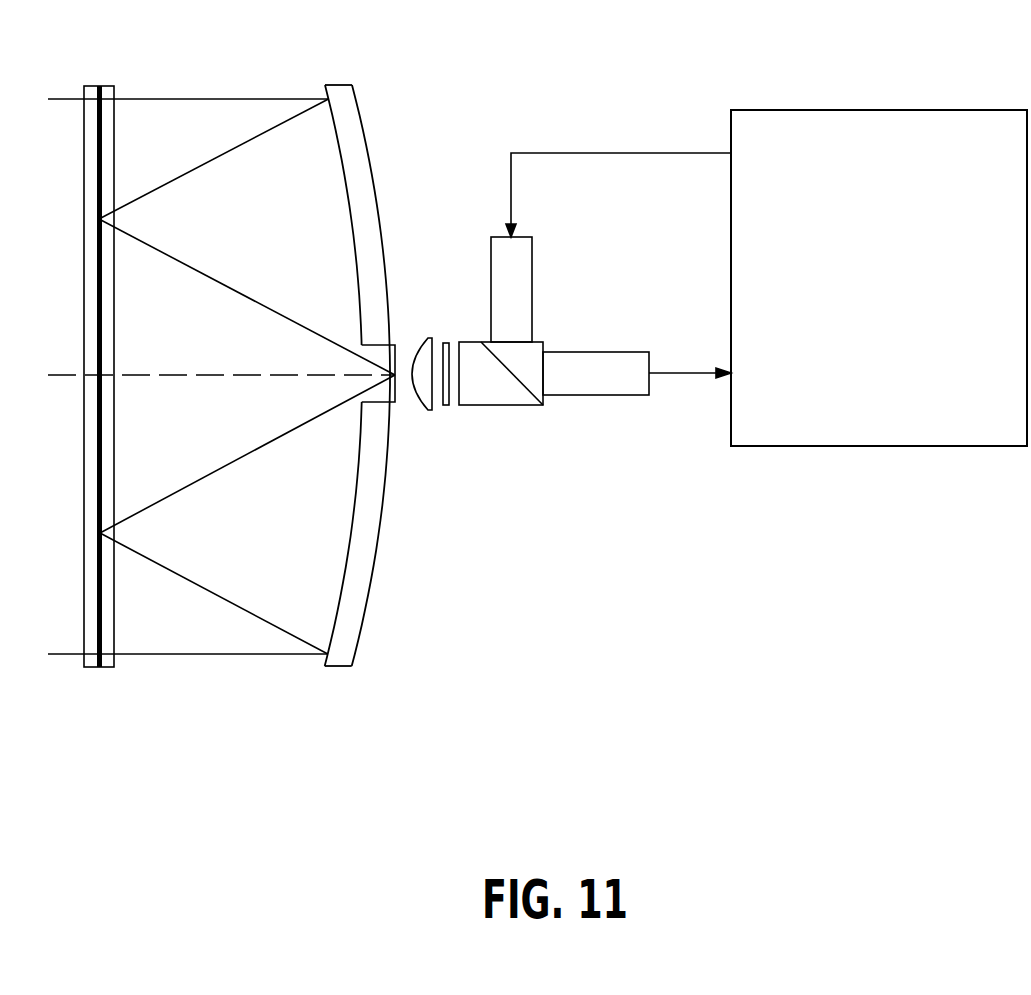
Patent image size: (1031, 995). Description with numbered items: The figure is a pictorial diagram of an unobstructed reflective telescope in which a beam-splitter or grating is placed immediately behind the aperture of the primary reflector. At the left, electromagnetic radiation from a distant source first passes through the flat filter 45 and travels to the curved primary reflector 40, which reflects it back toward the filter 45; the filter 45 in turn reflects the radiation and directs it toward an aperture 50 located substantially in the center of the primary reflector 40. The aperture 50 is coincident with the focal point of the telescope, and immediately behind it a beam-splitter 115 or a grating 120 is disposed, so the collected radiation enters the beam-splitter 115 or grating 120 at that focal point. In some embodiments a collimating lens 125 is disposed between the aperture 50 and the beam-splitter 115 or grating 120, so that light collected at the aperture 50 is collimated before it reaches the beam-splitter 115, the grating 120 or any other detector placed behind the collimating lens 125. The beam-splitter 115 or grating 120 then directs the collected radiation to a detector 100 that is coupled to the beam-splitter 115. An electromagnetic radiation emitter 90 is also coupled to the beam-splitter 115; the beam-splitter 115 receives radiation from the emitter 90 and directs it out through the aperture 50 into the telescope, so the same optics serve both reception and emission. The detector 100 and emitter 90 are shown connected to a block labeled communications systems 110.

The primary reflector 40 is at (381, 517).
The filter 45 is at (99, 86).
The aperture 50 is at (391, 332).
The electromagnetic radiation emitter 90 is at (533, 290).
The detector 100 is at (617, 396).
The communications systems 110 is at (826, 110).
The beam-splitter 115 is at (503, 406).
The grating 120 is at (446, 343).
The collimating lens 125 is at (427, 411).